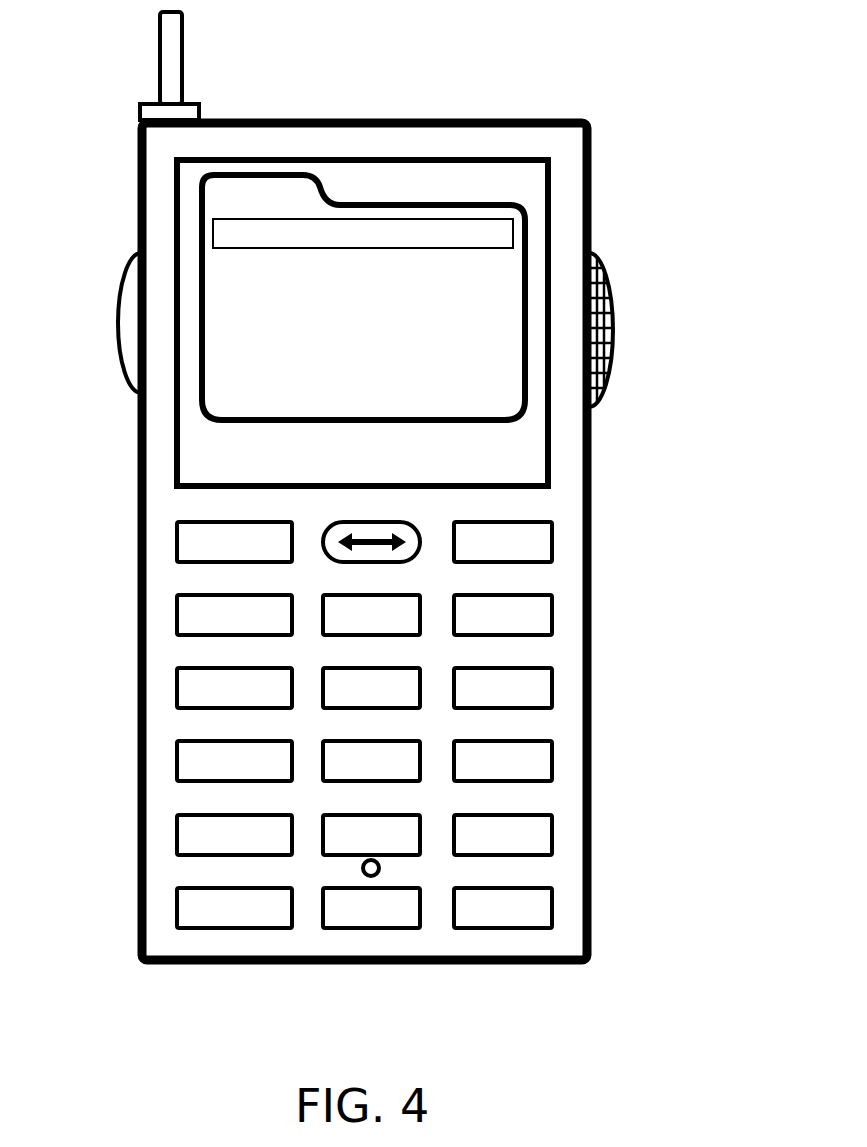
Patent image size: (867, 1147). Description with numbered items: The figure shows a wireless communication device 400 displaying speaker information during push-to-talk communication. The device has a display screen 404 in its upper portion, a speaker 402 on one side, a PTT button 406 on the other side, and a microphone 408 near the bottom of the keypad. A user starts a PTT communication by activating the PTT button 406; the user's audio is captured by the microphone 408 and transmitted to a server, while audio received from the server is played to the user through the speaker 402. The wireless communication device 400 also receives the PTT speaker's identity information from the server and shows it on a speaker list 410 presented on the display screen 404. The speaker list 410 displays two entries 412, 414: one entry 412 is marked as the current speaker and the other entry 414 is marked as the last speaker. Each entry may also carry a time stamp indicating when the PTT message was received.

The wireless communication device 400 is at (530, 44).
The speaker 402 is at (613, 358).
The display screen 404 is at (177, 218).
The PTT button 406 is at (118, 340).
The microphone 408 is at (373, 877).
The speaker list 410 is at (232, 172).
The entry 412 is at (513, 227).
The entry 414 is at (493, 262).